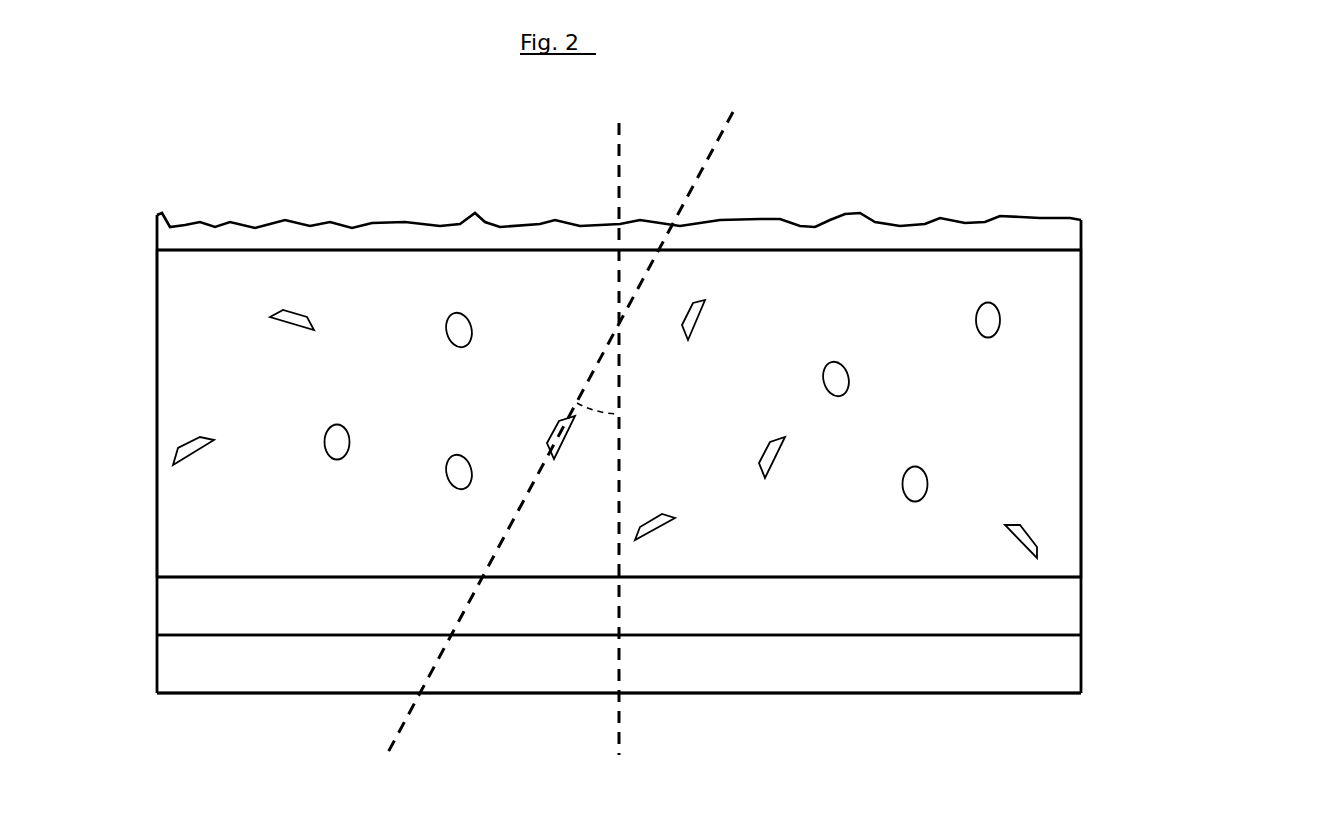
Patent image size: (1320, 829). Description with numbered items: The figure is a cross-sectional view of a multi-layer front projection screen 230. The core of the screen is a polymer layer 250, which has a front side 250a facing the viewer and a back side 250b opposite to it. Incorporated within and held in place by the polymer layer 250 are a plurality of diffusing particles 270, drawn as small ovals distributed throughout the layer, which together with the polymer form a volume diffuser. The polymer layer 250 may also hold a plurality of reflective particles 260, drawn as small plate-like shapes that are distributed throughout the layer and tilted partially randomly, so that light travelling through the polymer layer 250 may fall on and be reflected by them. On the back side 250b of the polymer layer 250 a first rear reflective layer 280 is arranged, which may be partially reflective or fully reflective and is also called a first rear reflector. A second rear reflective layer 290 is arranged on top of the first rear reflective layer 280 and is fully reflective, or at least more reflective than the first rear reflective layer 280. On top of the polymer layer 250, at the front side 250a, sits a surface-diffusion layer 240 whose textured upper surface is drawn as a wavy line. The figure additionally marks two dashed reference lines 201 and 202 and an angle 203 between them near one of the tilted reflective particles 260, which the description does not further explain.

The multi-layer front projection screen 230 is at (247, 200).
The angle between particle orientation and surface normal 203 is at (592, 413).
The particle orientation line 201 is at (736, 133).
The surface normal line 202 is at (620, 758).
The front side 250a is at (948, 250).
The surface-diffusion layer 240 is at (1055, 232).
The diffusing particles 270 is at (990, 320).
The polymer layer 250 is at (1054, 425).
The reflective particles 260 is at (1030, 543).
The first rear reflective layer 280 is at (1052, 607).
The second rear reflective layer 290 is at (1052, 665).
The back side 250b is at (915, 577).